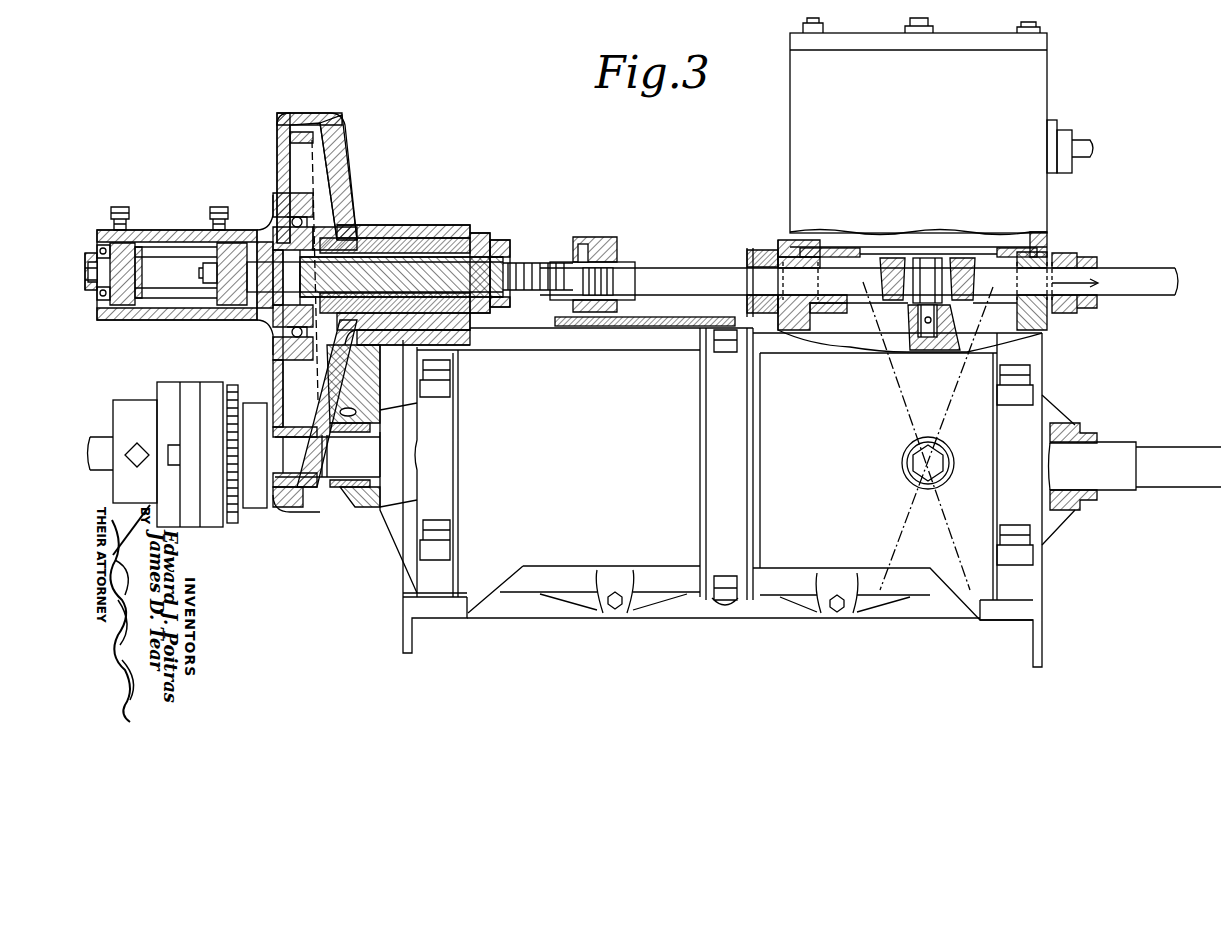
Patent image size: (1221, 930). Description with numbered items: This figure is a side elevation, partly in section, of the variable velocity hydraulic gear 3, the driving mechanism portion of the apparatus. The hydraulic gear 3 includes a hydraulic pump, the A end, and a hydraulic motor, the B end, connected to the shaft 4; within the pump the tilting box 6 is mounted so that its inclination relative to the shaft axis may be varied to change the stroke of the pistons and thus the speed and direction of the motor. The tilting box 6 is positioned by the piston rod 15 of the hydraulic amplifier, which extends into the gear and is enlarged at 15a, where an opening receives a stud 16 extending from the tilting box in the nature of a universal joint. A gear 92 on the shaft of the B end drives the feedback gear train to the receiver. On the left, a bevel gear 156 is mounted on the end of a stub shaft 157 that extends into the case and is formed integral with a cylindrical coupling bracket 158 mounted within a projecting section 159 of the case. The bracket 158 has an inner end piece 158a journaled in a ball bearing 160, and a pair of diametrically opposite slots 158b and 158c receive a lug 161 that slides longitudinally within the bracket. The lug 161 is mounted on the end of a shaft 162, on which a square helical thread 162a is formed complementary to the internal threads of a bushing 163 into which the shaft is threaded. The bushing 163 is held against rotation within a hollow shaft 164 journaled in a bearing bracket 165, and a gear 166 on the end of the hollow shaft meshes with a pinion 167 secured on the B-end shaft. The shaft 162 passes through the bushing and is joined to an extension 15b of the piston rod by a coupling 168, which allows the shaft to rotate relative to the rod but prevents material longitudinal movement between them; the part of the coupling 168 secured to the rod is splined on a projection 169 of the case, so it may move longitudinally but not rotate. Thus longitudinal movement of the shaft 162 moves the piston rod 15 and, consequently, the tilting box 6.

The hydraulic gear 3 is at (687, 550).
The shaft 4 is at (101, 445).
The tilting box 6 is at (955, 328).
The piston rod 15 is at (1138, 280).
The enlarged portion of piston rod 15a is at (980, 255).
The extension of piston rod 15b is at (708, 273).
The stud 16 is at (927, 273).
The gear 92 is at (232, 523).
The bevel gear 156 is at (93, 290).
The stub shaft 157 is at (95, 252).
The cylindrical coupling bracket 158 is at (121, 238).
The inner end piece 158a is at (267, 313).
The slot 158b is at (163, 247).
The slot 158c is at (170, 297).
The projecting section of the case 159 is at (183, 243).
The ball bearing 160 is at (313, 210).
The lug 161 is at (227, 300).
The shaft 162 is at (318, 250).
The square helical thread 162a is at (413, 267).
The bushing 163 is at (500, 247).
The hollow shaft 164 is at (445, 243).
The bearing bracket 165 is at (396, 224).
The gear 166 is at (305, 133).
The pinion 167 is at (302, 490).
The coupling 168 is at (598, 228).
The projection on the case 169 is at (635, 317).